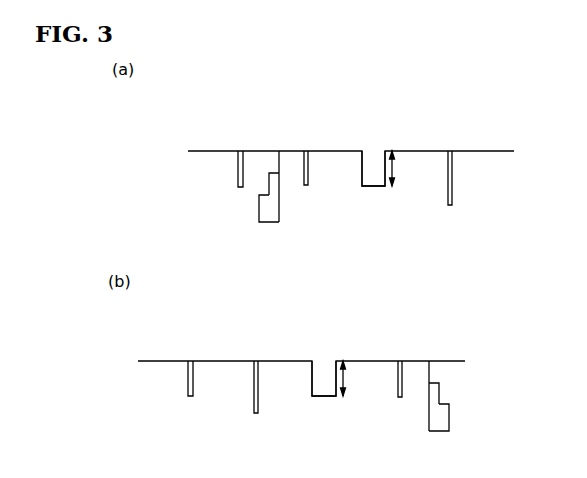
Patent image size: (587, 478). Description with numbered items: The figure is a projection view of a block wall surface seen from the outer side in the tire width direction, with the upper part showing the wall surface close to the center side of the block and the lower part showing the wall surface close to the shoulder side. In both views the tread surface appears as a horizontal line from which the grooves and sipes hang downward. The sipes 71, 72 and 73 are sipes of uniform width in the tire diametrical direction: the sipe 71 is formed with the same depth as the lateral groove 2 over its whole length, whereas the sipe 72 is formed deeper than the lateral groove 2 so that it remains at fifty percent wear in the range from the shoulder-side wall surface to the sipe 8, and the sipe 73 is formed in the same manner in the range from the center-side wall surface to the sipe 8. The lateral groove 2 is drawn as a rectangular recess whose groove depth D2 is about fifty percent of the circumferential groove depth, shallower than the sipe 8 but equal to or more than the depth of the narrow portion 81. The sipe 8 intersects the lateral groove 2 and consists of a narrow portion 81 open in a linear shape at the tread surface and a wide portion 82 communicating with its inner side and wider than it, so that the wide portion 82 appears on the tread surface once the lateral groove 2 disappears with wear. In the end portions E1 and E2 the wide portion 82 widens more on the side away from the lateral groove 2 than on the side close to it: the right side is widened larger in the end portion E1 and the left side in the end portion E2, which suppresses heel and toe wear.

The sipe 71 is at (241, 150).
The sipe 72 is at (306, 150).
The sipe 73 is at (450, 150).
The sipe 8 is at (382, 276).
The narrow portion 81 is at (282, 173).
The wide portion 82 is at (282, 203).
The lateral groove 2 is at (366, 163).
The groove depth D2 is at (380, 273).
The end portion E1 is at (411, 429).
The end portion E2 is at (247, 218).